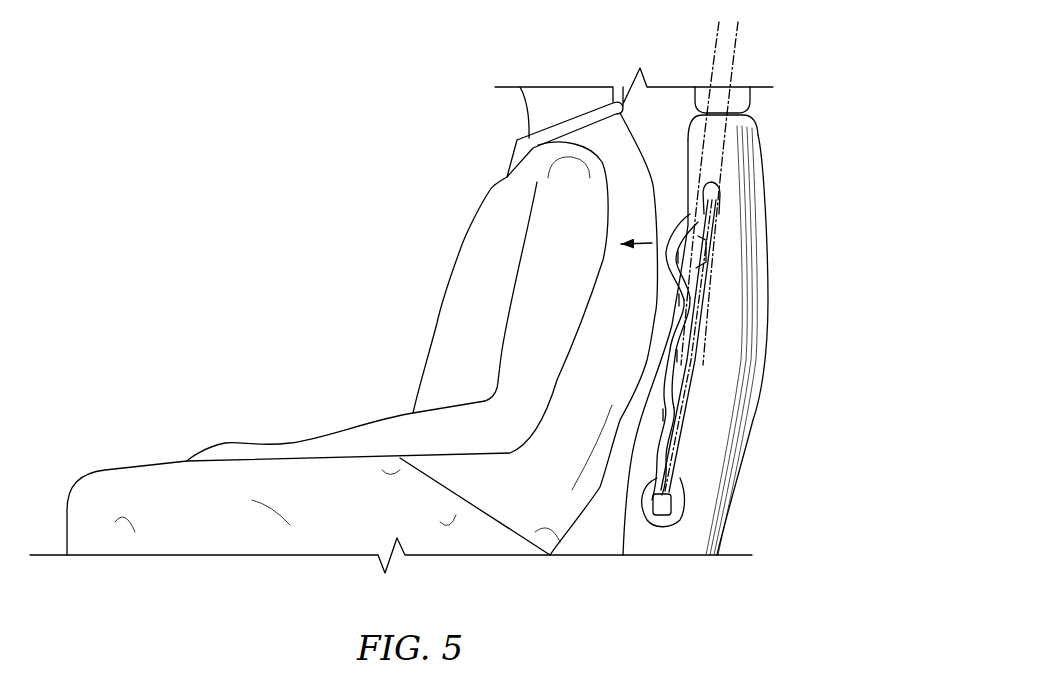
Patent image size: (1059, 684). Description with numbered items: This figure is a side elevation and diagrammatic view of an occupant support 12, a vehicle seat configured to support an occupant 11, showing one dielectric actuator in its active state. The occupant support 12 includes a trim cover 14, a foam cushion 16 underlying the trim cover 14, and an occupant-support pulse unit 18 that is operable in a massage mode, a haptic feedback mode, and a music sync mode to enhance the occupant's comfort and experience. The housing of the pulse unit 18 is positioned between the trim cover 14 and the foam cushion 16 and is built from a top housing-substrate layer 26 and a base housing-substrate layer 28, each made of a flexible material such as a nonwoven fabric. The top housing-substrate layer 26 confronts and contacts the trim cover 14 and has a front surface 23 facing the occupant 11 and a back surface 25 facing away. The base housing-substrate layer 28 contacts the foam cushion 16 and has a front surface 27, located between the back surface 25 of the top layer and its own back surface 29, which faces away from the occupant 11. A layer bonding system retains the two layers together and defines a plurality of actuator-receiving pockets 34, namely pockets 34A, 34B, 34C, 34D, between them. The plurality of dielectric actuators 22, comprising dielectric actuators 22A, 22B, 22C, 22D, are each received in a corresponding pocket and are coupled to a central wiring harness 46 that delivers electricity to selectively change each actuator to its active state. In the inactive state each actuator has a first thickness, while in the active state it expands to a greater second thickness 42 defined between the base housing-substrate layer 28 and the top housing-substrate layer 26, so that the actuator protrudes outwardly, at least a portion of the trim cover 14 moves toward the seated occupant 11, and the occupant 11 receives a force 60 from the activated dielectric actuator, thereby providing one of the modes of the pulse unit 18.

The occupant 11 is at (447, 230).
The occupant support 12 is at (663, 121).
The trim cover 14 is at (689, 190).
The foam cushion 16 is at (700, 338).
The occupant-support pulse unit 18 is at (721, 189).
The plurality of dielectric actuators 22 is at (819, 431).
The dielectric actuator 22A is at (707, 268).
The dielectric actuator 22B is at (705, 315).
The dielectric actuator 22C is at (686, 366).
The dielectric actuator 22D is at (677, 413).
The front surface 23 is at (691, 307).
The back surface 25 is at (668, 480).
The top housing-substrate layer 26 is at (695, 222).
The front surface 27 is at (672, 472).
The base housing-substrate layer 28 is at (708, 237).
The back surface 29 is at (694, 260).
The plurality of actuator-receiving pockets 34 is at (548, 410).
The actuator-receiving pocket 34A is at (677, 257).
The actuator-receiving pocket 34B is at (678, 300).
The actuator-receiving pocket 34C is at (676, 356).
The actuator-receiving pocket 34D is at (662, 415).
The second thickness 42 is at (690, 40).
The central wiring harness 46 is at (675, 516).
The force 60 is at (630, 240).